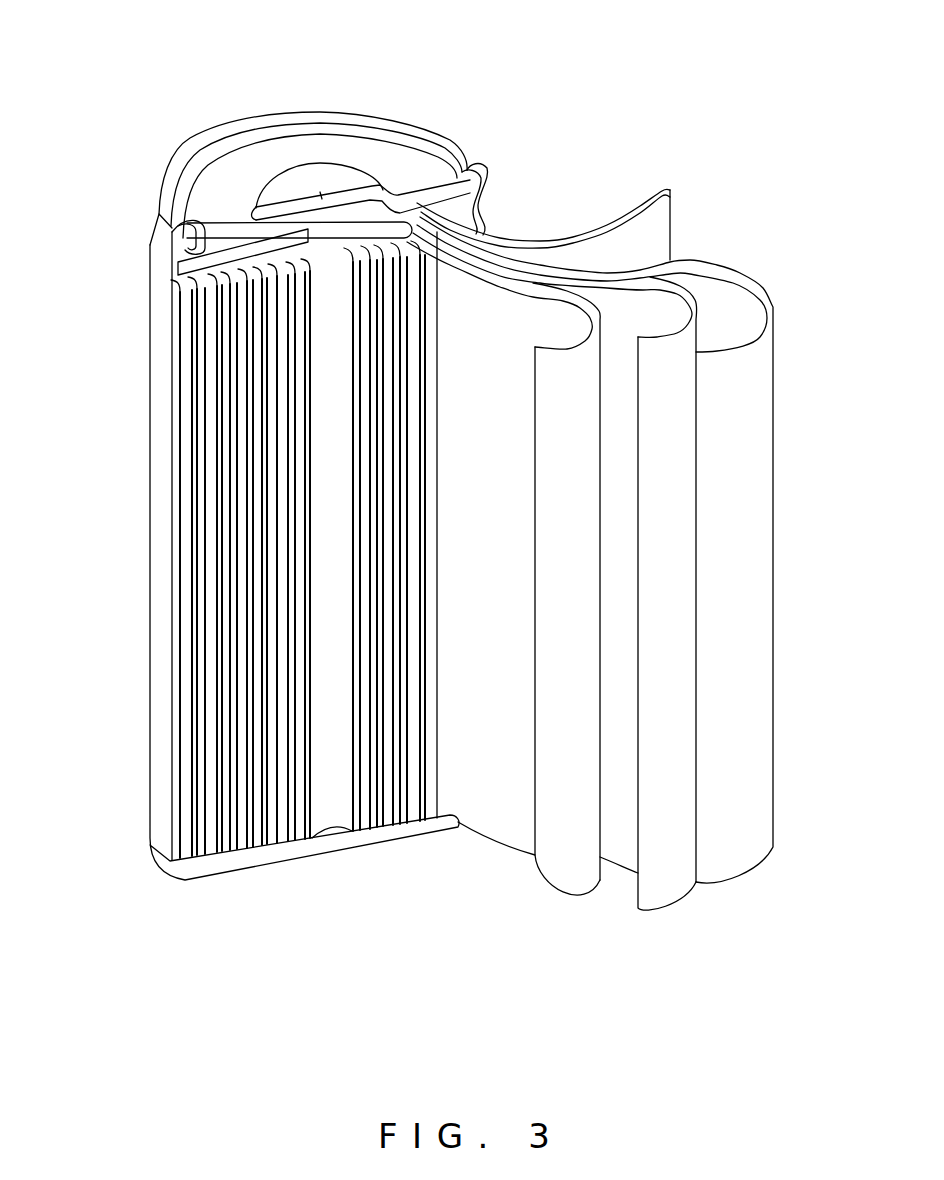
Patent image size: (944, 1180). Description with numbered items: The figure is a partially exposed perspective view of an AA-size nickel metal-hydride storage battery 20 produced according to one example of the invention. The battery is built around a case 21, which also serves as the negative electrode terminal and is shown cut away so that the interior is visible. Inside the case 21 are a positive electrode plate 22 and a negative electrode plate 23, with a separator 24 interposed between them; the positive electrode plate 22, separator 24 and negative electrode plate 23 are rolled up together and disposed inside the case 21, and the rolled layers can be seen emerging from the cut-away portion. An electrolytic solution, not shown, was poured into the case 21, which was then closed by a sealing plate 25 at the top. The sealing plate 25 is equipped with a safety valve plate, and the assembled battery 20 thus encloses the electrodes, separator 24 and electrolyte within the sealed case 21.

The nickel metal-hydride storage battery 20 is at (178, 118).
The case 21 is at (157, 628).
The positive electrode plate 22 is at (567, 882).
The negative electrode plate 23 is at (752, 496).
The separator 24 is at (677, 681).
The sealing plate 25 is at (323, 170).